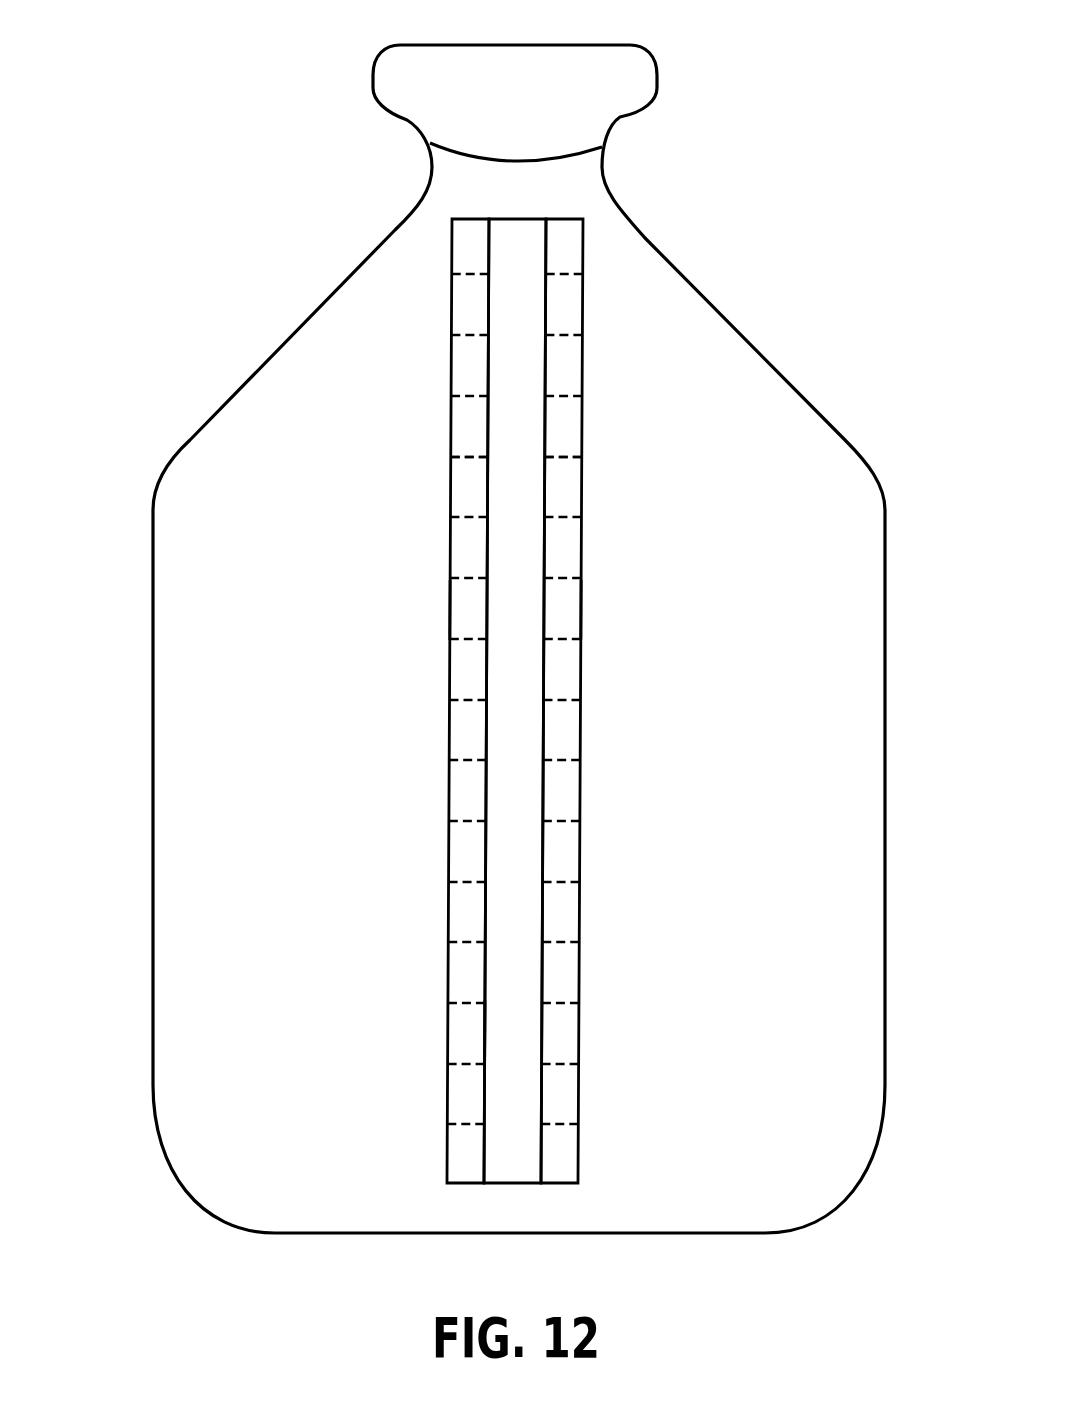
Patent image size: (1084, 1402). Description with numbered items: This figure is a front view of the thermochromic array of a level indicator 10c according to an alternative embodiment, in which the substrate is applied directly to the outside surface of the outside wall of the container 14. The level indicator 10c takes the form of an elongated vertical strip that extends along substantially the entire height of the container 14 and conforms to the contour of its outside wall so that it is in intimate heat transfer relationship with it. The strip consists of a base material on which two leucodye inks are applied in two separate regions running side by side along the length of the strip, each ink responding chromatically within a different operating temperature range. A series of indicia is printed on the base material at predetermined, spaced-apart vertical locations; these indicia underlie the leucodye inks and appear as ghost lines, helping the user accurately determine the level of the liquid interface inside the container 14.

The level indicator 10c is at (395, 666).
The container 14 is at (747, 328).